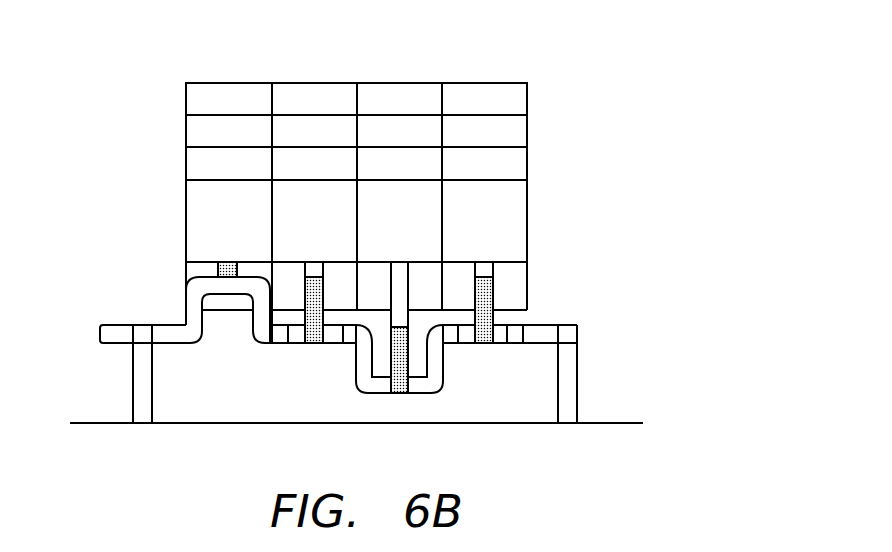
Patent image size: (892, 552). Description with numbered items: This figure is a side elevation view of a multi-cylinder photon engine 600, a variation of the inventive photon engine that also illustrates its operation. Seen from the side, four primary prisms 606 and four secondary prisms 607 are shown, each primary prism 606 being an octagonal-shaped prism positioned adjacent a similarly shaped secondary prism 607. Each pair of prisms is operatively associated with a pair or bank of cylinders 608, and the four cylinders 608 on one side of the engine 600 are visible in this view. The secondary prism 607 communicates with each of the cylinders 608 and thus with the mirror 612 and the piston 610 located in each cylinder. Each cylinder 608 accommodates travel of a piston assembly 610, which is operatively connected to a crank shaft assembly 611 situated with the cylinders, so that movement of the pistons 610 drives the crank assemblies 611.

The multi-cylinder photon engine 600 is at (700, 175).
The primary prism 606 is at (408, 168).
The secondary prism 607 is at (425, 268).
The cylinder 608 is at (493, 320).
The piston assembly 610 is at (327, 310).
The crank shaft assembly 611 is at (418, 384).
The mirror 612 is at (312, 275).